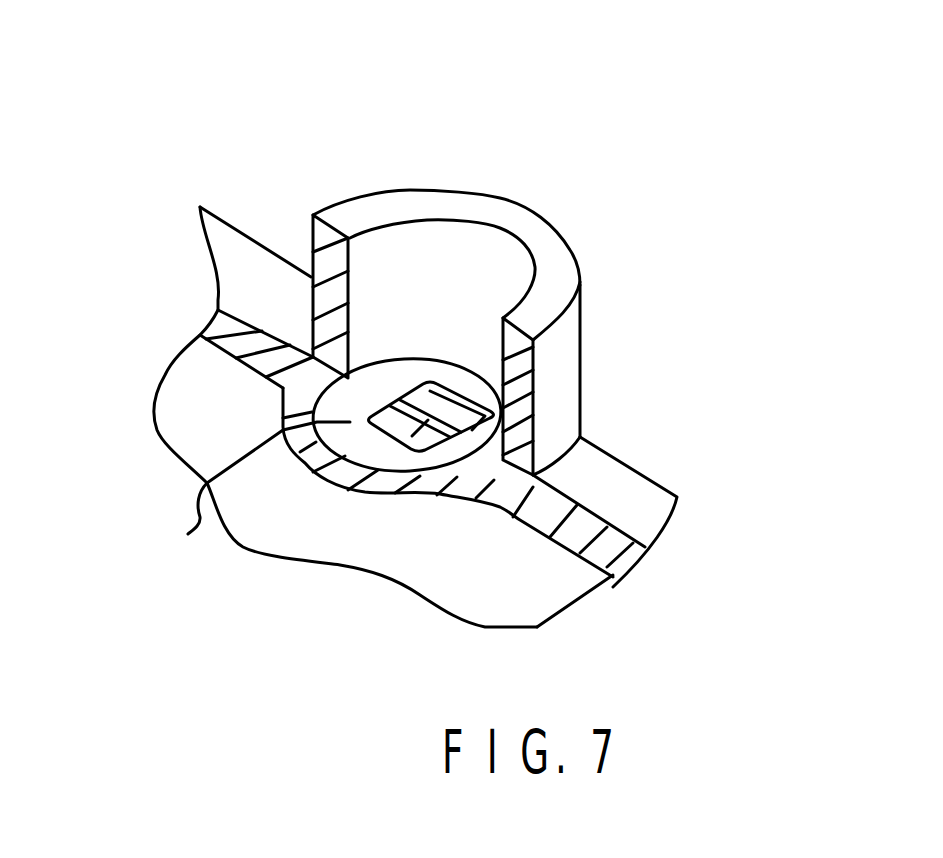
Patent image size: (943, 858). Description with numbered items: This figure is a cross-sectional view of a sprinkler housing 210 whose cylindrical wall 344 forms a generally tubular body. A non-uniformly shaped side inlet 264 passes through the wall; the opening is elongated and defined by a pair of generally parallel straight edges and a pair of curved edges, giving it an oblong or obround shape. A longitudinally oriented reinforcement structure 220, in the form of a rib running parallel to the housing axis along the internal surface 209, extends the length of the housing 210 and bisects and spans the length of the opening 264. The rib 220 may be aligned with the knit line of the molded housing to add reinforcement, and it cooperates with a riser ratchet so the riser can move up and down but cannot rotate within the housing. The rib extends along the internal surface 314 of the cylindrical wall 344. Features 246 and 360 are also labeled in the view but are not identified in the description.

The sprinkler housing 210 is at (707, 359).
The cylindrical wall 246 is at (550, 244).
The side inlet 264 is at (455, 412).
The reinforcement structure 220 is at (425, 418).
The side wall 360 is at (203, 520).
The cylindrical wall 344 is at (647, 507).
The internal surface 209 is at (538, 598).
The internal surface 314 is at (577, 577).